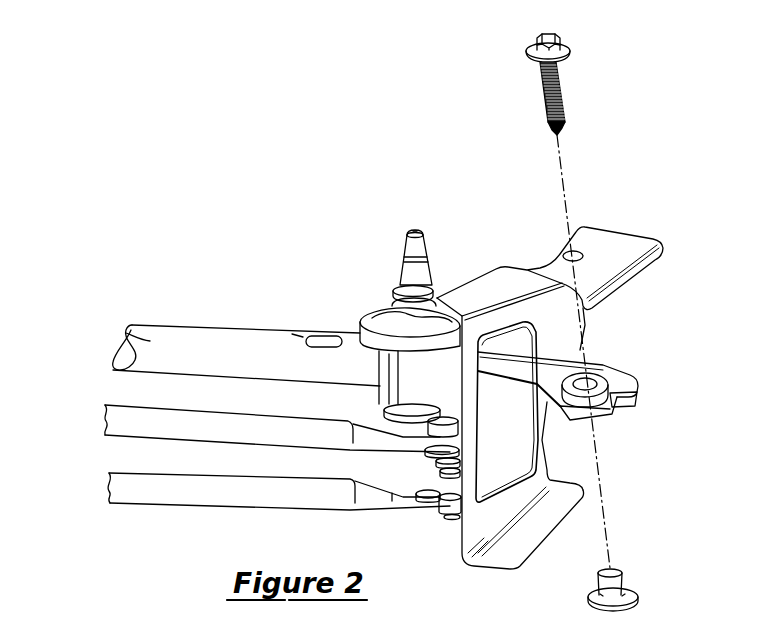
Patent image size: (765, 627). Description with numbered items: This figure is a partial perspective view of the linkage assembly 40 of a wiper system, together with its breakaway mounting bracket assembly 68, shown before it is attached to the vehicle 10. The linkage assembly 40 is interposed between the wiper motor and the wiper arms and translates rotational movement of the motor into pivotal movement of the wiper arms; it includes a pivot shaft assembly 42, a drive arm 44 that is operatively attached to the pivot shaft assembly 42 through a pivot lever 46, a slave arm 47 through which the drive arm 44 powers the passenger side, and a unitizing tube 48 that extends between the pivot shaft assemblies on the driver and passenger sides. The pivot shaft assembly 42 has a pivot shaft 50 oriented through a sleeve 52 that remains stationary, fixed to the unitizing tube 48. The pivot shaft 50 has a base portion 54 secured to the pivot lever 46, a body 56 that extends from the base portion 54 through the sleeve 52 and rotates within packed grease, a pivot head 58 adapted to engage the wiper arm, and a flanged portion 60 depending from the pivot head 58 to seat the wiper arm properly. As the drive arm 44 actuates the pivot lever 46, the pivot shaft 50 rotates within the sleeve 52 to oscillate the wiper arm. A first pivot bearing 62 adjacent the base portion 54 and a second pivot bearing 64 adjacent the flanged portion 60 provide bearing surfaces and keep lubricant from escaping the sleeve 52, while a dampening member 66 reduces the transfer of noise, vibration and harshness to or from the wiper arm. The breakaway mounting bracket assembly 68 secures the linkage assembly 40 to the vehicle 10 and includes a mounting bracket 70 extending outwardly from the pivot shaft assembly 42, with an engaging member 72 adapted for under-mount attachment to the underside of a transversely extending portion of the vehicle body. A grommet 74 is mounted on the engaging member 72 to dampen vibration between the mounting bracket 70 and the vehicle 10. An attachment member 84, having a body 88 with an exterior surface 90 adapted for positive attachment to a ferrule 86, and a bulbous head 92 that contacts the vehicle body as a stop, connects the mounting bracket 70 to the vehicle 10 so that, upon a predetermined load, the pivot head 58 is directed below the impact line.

The vehicle 10 is at (632, 222).
The linkage assembly 40 is at (245, 379).
The pivot shaft assembly 42 is at (418, 228).
The drive arm 44 is at (120, 492).
The pivot lever 46 is at (430, 460).
The slave arm 47 is at (123, 418).
The unitizing tube 48 is at (147, 338).
The pivot shaft 50 is at (360, 323).
The sleeve 52 is at (365, 307).
The base portion 54 is at (379, 373).
The body 56 is at (424, 288).
The pivot head 58 is at (415, 230).
The flanged portion 60 is at (416, 250).
The first pivot bearing 62 is at (388, 408).
The second pivot bearing 64 is at (402, 299).
The dampening member 66 is at (360, 313).
The breakaway mounting bracket assembly 68 is at (604, 370).
The mounting bracket 70 is at (513, 398).
The engaging member 72 is at (648, 397).
The grommet 74 is at (632, 400).
The attachment member 84 is at (562, 84).
The ferrule 86 is at (654, 590).
The body 88 is at (546, 86).
The exterior surface 90 is at (548, 108).
The bulbous head 92 is at (536, 44).